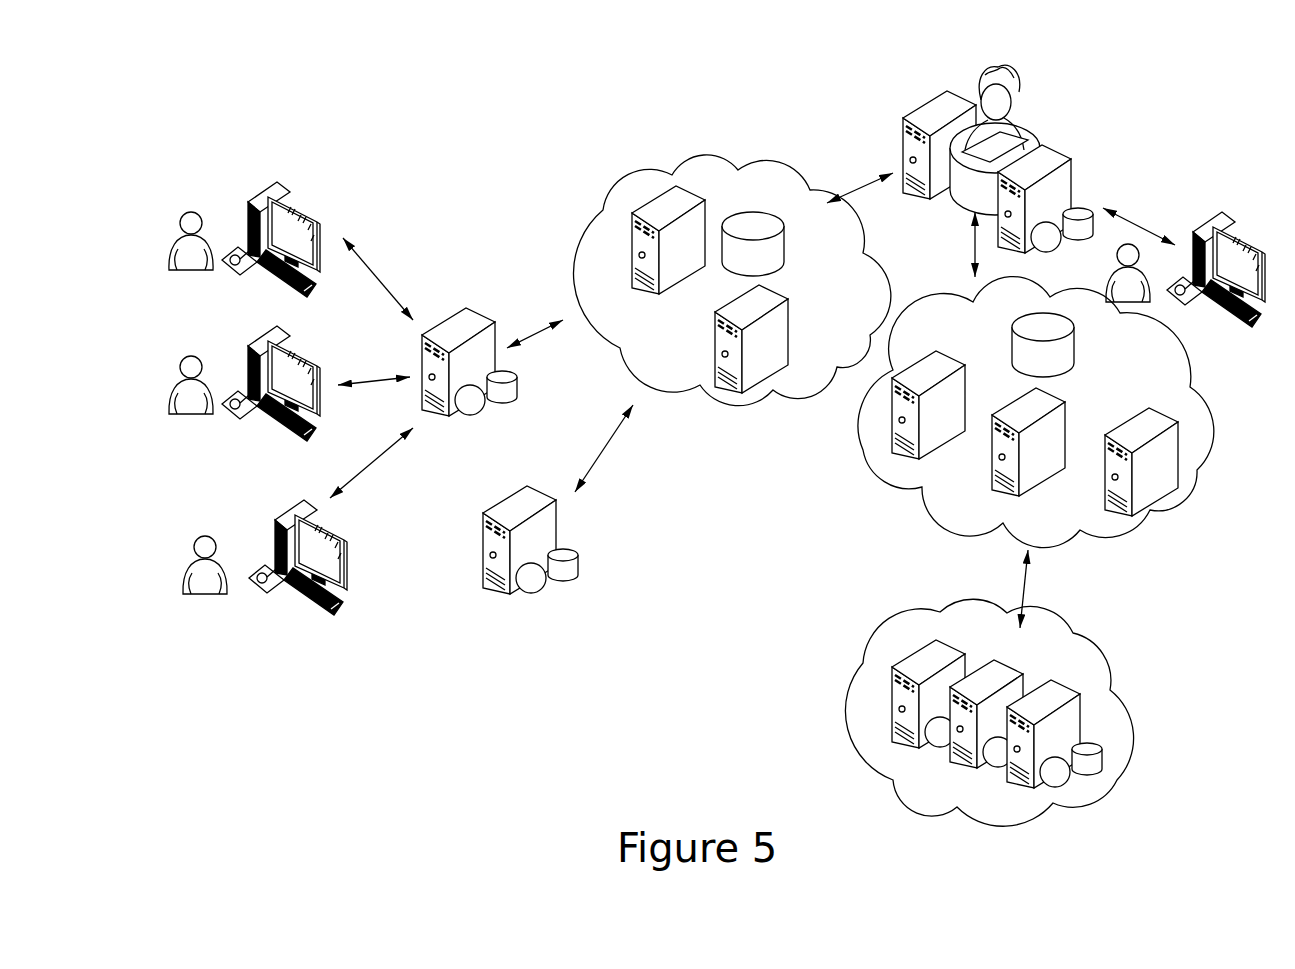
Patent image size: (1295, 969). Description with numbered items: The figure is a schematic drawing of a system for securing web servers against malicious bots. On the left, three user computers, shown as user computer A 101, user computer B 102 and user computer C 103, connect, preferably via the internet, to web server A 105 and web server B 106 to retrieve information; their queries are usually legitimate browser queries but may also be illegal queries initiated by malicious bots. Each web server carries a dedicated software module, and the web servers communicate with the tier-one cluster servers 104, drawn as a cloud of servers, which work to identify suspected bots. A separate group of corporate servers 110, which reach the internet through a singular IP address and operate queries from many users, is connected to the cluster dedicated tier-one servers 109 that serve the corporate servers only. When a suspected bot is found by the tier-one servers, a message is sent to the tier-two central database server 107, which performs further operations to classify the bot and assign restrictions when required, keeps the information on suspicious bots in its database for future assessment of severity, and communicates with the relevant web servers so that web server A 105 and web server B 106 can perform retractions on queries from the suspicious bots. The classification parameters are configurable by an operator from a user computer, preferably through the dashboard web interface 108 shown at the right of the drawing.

The user computer A 101 is at (282, 513).
The user computer B 102 is at (280, 329).
The user computer C 103 is at (280, 185).
The cluster server tier 1 104 is at (787, 168).
The web server A 105 is at (478, 318).
The web server B 106 is at (505, 500).
The tier 2 central DB server 107 is at (988, 68).
The dashboard web interface 108 is at (1228, 222).
The cluster dedicated tier 1 servers 109 is at (1216, 480).
The corporate servers 110 is at (1110, 680).